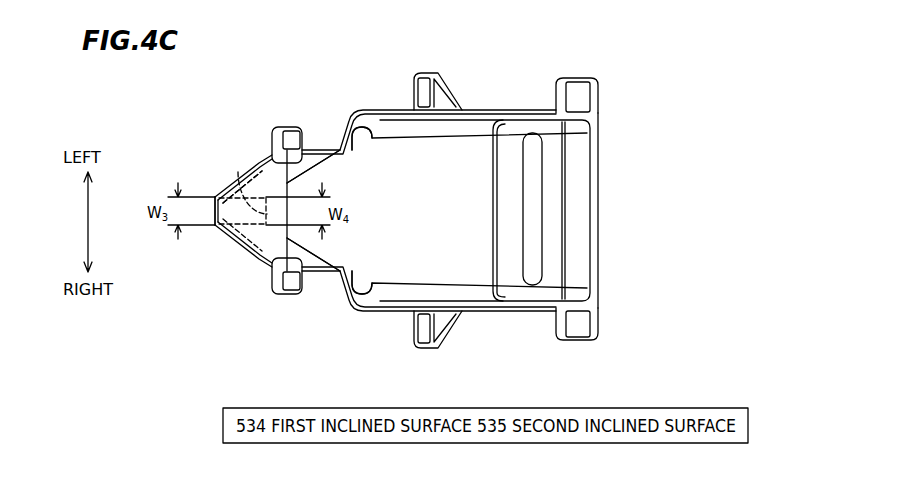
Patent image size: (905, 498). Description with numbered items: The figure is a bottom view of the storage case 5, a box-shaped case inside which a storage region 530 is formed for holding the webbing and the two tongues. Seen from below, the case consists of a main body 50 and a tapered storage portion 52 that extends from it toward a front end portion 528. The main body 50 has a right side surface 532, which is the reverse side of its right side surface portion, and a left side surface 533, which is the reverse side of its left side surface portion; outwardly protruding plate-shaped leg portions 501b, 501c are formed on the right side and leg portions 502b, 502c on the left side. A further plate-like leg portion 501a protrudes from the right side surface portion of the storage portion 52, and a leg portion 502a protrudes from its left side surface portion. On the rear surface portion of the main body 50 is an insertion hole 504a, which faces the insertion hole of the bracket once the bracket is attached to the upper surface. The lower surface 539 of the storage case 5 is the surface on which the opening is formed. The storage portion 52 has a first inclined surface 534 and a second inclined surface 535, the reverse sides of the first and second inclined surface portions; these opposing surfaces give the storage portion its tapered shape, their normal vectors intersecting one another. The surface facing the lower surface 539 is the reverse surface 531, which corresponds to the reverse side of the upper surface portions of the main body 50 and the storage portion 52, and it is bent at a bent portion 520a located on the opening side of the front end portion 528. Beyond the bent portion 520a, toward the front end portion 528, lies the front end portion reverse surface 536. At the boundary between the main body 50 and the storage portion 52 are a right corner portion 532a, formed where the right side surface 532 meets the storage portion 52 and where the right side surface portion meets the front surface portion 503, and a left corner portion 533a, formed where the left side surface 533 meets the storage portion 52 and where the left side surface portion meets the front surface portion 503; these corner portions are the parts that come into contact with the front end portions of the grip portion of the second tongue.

The storage case 5 is at (600, 128).
The main body 50 is at (470, 108).
The storage portion 52 is at (223, 246).
The leg portion 501a is at (278, 135).
The leg portion 501b is at (428, 82).
The leg portion 501c is at (592, 90).
The leg portion 502a is at (276, 280).
The leg portion 502b is at (432, 336).
The leg portion 502c is at (560, 333).
The front surface portion 503 is at (343, 135).
The insertion hole 504a is at (527, 182).
The bent portion 520a is at (253, 208).
The front end portion 528 is at (214, 220).
The storage region 530 is at (598, 217).
The reverse surface 531 is at (395, 150).
The right side surface 532 is at (480, 116).
The right corner portion 532a is at (350, 127).
The left side surface 533 is at (447, 292).
The left corner portion 533a is at (345, 292).
The first inclined surface 534 is at (297, 165).
The second inclined surface 535 is at (300, 255).
The front end portion reverse surface 536 is at (236, 208).
The lower surface 539 is at (595, 262).